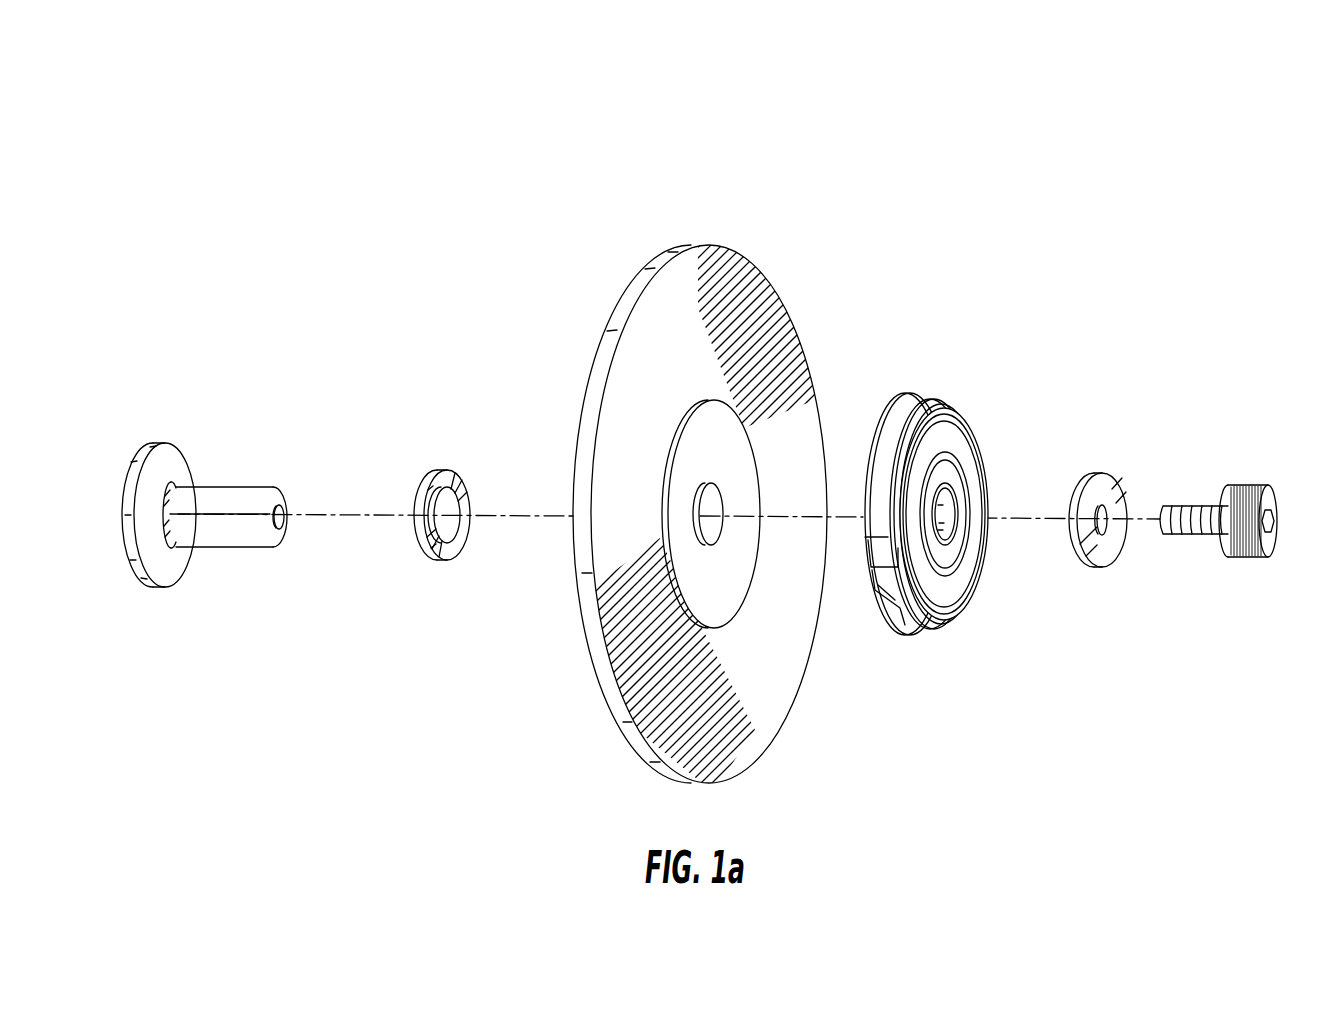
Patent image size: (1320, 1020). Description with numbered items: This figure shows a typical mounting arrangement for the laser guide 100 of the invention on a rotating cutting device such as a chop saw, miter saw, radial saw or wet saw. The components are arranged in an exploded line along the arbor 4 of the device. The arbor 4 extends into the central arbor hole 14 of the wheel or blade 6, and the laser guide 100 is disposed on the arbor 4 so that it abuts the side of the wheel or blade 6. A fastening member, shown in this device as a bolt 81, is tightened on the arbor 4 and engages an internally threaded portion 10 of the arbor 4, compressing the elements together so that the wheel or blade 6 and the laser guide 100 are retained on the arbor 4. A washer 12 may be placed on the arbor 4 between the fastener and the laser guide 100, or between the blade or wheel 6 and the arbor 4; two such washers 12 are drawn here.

The arbor 4 is at (243, 485).
The wheel or blade 6 is at (700, 245).
The internally threaded portion 10 is at (273, 548).
The washer 12 is at (455, 470).
The central arbor hole 14 is at (717, 500).
The screw 81 is at (1203, 502).
The laser guide 100 is at (952, 410).